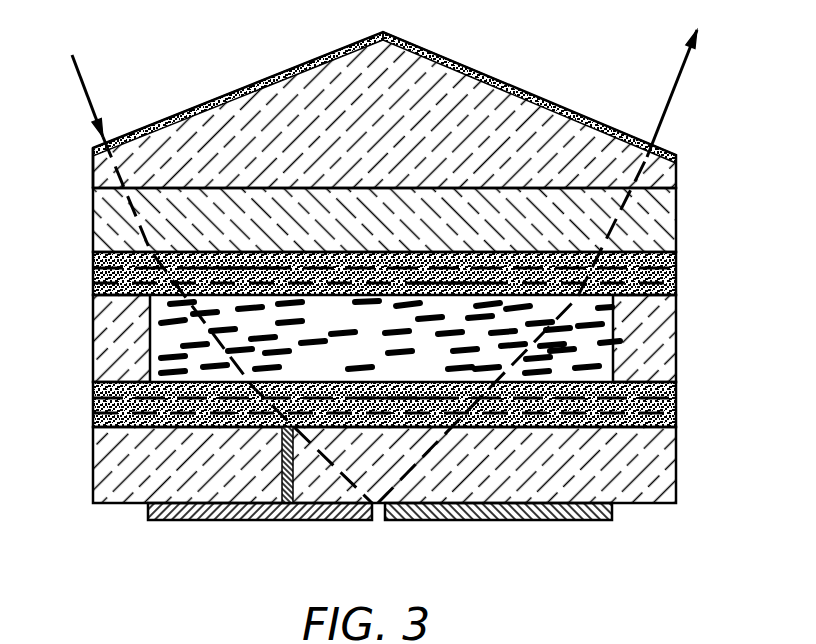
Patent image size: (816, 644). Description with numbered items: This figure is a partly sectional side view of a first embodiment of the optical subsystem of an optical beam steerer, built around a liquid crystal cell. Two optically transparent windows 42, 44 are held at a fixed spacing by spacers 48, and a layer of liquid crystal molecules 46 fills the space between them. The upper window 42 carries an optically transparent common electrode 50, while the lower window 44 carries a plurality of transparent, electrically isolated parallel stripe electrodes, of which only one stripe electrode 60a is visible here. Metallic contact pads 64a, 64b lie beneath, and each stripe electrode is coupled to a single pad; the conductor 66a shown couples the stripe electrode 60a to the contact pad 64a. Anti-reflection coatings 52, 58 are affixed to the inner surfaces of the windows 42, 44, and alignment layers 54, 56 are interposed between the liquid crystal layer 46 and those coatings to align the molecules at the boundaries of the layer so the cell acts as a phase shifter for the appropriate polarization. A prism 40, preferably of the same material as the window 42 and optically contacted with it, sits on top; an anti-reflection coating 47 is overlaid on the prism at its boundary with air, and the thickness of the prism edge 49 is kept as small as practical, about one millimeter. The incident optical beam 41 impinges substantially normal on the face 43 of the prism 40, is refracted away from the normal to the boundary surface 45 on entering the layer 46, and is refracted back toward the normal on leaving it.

The prism 40 is at (432, 70).
The incident optical beam 41 is at (88, 82).
The window 42 is at (676, 224).
The face of prism 43 is at (343, 44).
The window 44 is at (663, 474).
The boundary surface 45 is at (238, 268).
The layer of liquid crystal molecules 46 is at (535, 356).
The anti-reflection coating 47 is at (539, 96).
The spacers 48 is at (93, 345).
The prism edge 49 is at (93, 172).
The common electrode 50 is at (677, 260).
The anti-reflection coating 52 is at (443, 258).
The alignment layer 54 is at (373, 296).
The alignment layer 56 is at (297, 383).
The anti-reflection coating 58 is at (396, 383).
The stripe electrode 60a is at (677, 418).
The contact pad 64a is at (197, 520).
The contact pad 64b is at (515, 520).
The conductor 66a is at (282, 463).